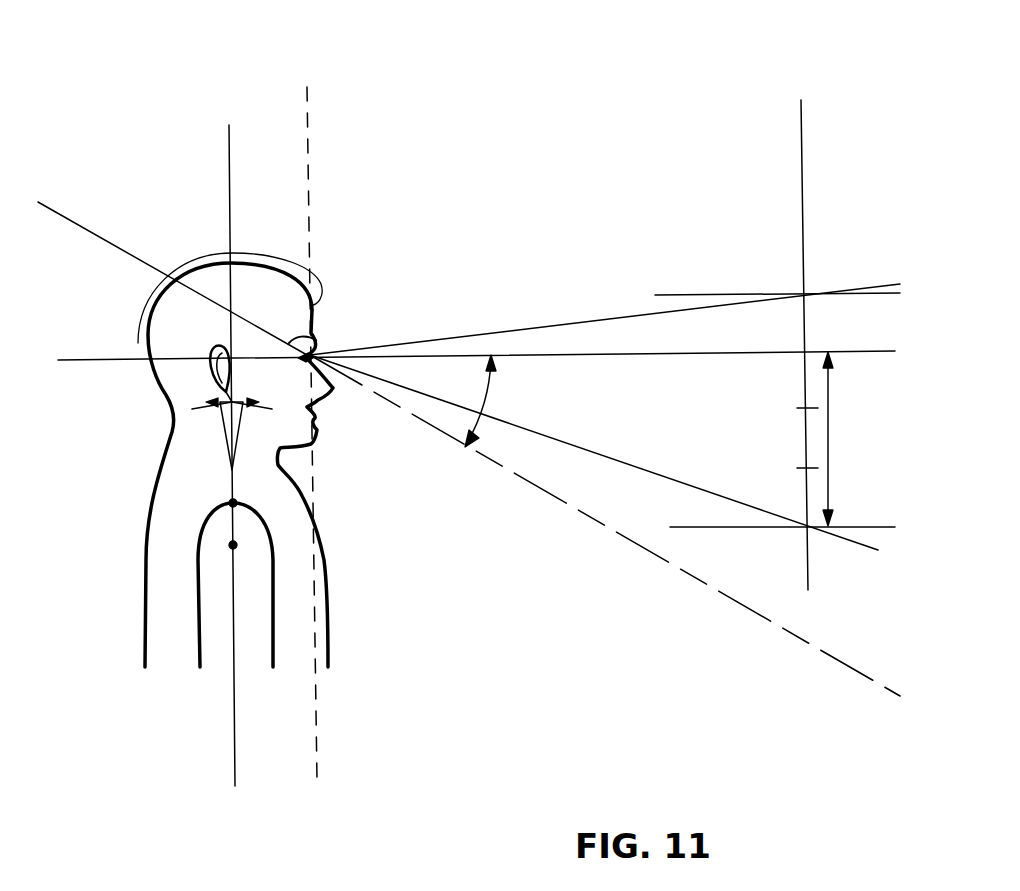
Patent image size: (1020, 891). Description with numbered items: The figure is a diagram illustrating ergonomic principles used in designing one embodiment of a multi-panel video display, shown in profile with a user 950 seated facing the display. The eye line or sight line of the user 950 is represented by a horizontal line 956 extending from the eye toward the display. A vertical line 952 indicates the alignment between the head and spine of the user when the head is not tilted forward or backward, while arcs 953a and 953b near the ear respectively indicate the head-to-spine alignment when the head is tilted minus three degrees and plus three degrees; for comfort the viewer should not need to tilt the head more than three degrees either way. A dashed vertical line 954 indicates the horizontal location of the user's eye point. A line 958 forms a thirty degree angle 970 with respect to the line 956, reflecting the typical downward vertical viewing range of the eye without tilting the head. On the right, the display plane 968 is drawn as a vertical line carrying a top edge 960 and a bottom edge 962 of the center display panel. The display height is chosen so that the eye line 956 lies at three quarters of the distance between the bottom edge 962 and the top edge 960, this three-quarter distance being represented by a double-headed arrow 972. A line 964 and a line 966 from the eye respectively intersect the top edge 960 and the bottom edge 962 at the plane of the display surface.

The user 950 is at (146, 550).
The line 952 is at (229, 125).
The arc 953a is at (213, 410).
The arc 953b is at (242, 410).
The line 954 is at (311, 90).
The line 956 is at (68, 358).
The line 958 is at (62, 212).
The top edge 960 is at (655, 295).
The bottom edge 962 is at (720, 527).
The line 964 is at (516, 330).
The line 966 is at (548, 440).
The display plane 968 is at (801, 100).
The 30 degree angle 970 is at (478, 425).
The double-headed arrow 972 is at (832, 432).